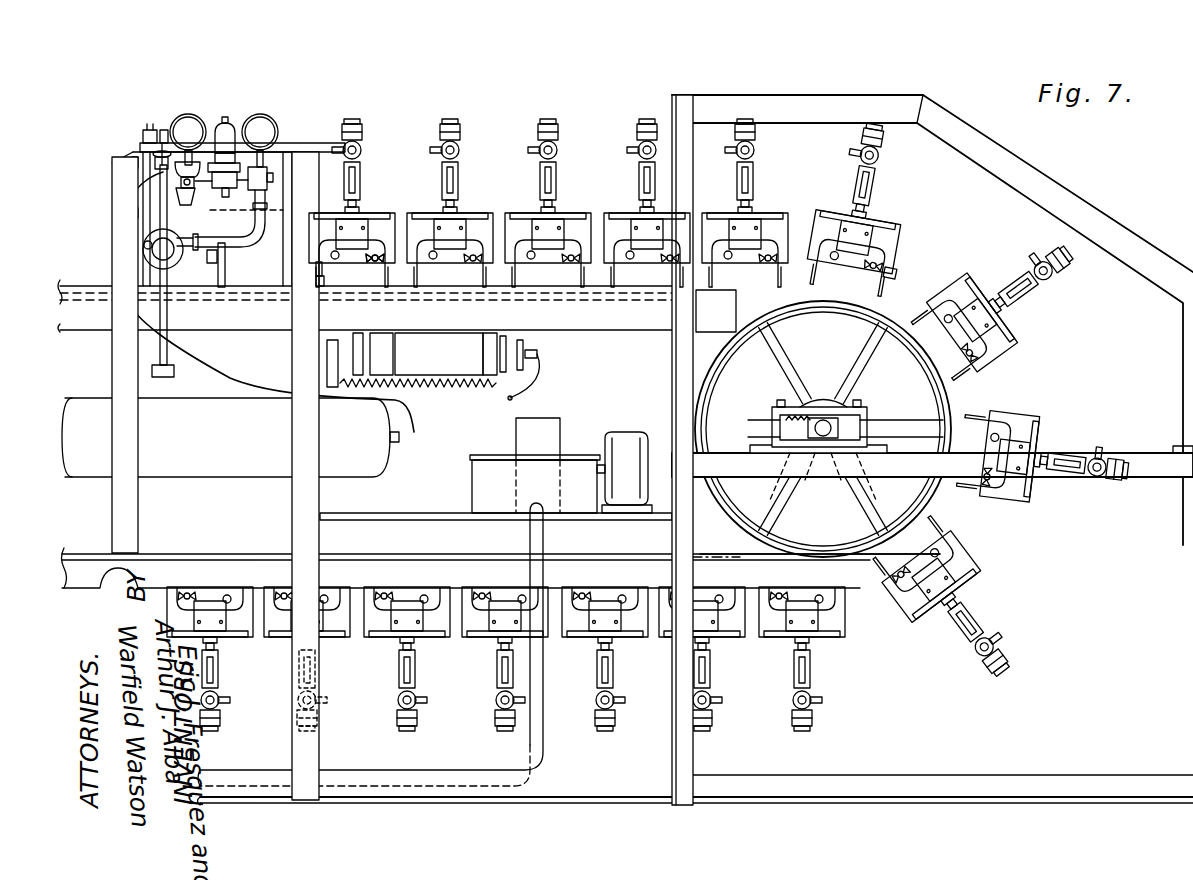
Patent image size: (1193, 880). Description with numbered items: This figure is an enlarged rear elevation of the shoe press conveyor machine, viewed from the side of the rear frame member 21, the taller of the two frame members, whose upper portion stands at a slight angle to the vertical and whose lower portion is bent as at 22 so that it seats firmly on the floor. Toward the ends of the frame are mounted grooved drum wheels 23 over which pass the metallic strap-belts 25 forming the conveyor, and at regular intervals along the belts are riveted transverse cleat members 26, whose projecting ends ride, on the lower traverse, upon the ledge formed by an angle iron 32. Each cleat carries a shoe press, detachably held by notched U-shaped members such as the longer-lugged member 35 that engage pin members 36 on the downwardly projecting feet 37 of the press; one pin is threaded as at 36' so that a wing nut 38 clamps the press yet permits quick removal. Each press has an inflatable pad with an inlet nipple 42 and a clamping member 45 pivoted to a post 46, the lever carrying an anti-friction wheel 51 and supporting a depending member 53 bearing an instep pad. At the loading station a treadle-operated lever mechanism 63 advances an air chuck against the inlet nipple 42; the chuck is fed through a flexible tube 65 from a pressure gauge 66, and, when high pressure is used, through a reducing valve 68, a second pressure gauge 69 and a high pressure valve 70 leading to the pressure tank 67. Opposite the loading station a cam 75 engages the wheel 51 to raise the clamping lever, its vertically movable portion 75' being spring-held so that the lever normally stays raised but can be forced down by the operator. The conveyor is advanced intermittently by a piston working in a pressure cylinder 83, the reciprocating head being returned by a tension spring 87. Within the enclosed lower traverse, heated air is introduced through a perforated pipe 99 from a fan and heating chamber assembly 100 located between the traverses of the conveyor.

The rear frame member 21 is at (623, 318).
The bent lower portion 22 is at (318, 642).
The drum wheel 23 is at (710, 391).
The strap-belt 25 is at (740, 554).
The cleat member 26 is at (217, 556).
The angle iron 32 is at (408, 575).
The U-shaped member 35 is at (475, 272).
The pin member 36 is at (666, 391).
The threaded portion 36' is at (705, 312).
The foot 37 is at (890, 268).
The wing nut 38 is at (378, 265).
The inlet nipple 42 is at (997, 550).
The clamping member 45 is at (358, 162).
The post 46 is at (361, 183).
The anti-friction wheel 51 is at (362, 148).
The depending member 53 is at (362, 128).
The lever mechanism 63 is at (168, 312).
The flexible tube 65 is at (232, 247).
The pressure gauge 66 is at (272, 122).
The pressure tank 67 is at (230, 437).
The reducing valve 68 is at (230, 125).
The second pressure gauge 69 is at (193, 118).
The high pressure valve 70 is at (163, 146).
The cam 75 is at (266, 113).
The vertically movable portion 75' is at (124, 132).
The pressure cylinder 83 is at (433, 366).
The tension spring 87 is at (457, 385).
The perforated pipe 99 is at (470, 770).
The fan and heating chamber assembly 100 is at (590, 446).